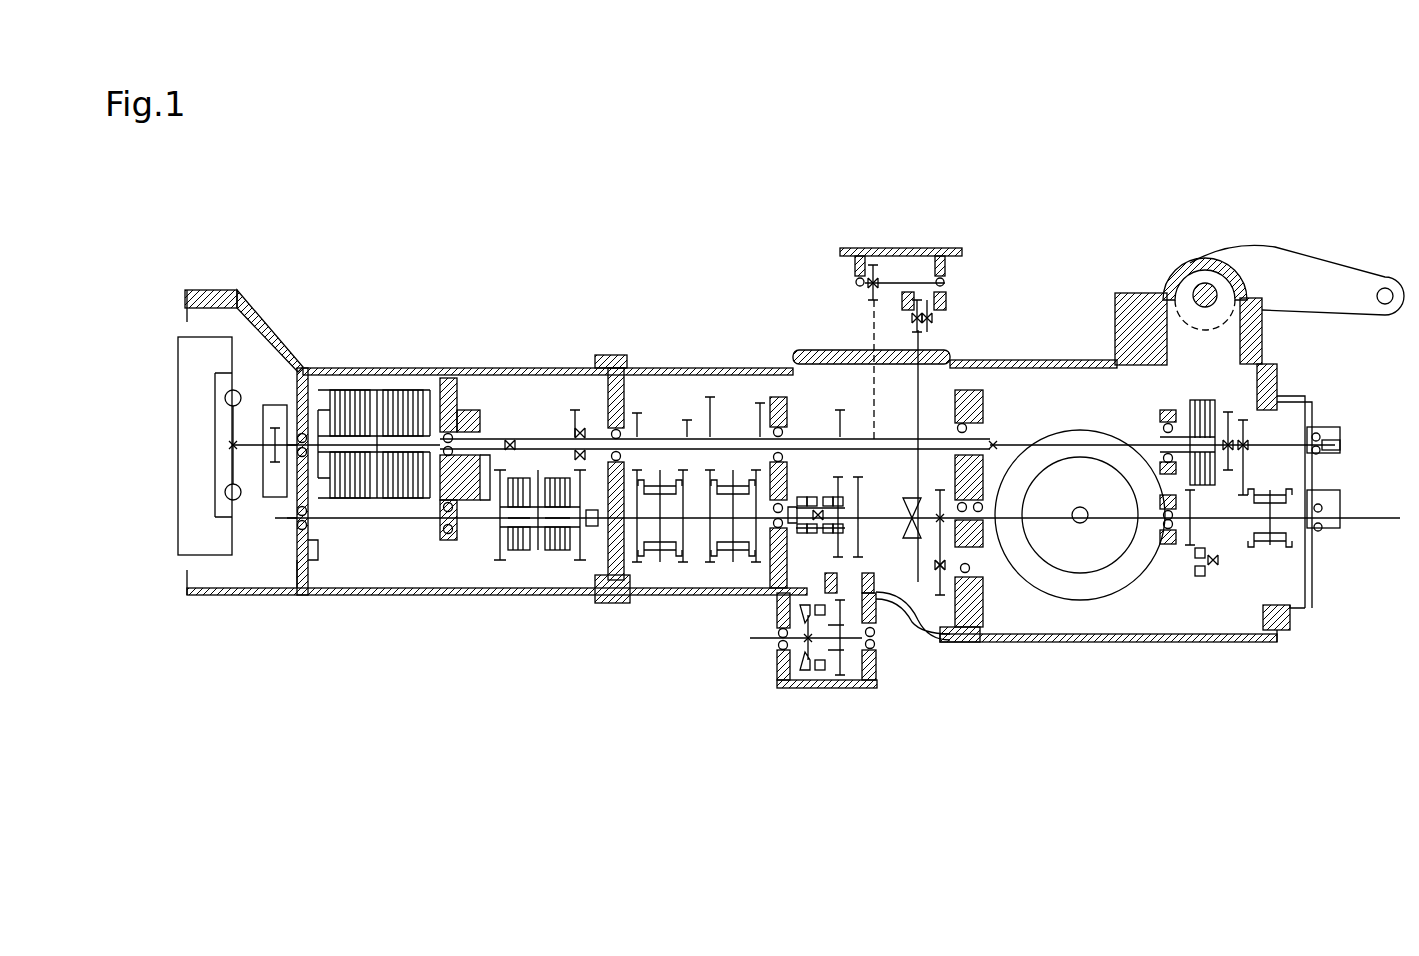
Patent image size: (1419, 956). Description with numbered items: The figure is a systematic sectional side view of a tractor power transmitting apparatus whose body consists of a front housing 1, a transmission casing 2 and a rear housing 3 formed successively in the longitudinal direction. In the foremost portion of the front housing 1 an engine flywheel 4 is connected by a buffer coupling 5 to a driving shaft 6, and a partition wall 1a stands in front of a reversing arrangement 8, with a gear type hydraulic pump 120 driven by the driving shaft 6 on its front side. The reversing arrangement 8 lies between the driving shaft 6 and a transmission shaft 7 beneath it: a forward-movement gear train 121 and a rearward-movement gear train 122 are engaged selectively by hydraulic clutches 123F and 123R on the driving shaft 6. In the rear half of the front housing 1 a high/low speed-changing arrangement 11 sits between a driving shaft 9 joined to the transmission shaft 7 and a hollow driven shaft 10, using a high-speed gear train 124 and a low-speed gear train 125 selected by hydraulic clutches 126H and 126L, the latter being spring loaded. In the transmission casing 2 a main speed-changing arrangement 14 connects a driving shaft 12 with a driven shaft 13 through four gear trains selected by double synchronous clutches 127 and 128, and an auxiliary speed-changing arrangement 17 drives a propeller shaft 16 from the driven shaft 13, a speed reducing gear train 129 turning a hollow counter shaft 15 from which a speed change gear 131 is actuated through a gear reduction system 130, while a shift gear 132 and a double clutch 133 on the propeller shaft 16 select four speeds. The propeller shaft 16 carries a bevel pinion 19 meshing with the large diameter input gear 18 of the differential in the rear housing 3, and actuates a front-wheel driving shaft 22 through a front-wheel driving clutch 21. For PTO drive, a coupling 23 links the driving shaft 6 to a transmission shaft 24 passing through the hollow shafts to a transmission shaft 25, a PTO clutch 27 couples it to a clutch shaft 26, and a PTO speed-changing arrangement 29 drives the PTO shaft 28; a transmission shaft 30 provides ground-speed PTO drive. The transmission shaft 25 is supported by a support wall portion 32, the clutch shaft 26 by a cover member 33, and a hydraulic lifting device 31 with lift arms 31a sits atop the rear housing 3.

The front housing 1 is at (480, 368).
The partition wall 1a is at (300, 557).
The transmission casing 2 is at (745, 455).
The rear housing 3 is at (1158, 642).
The engine flywheel 4 is at (205, 362).
The buffer coupling 5 is at (237, 500).
The driving shaft 6 is at (258, 440).
The transmission shaft 7 is at (380, 520).
The reversing arrangement 8 is at (351, 548).
The driving shaft 9 is at (470, 548).
The hollow driven shaft 10 is at (562, 437).
The high/low speed-changing arrangement 11 is at (540, 428).
The driving shaft 12 is at (663, 433).
The driven shaft 13 is at (700, 565).
The main speed-changing arrangement 14 is at (690, 400).
The hollow counter shaft 15 is at (945, 430).
The propeller shaft 16 is at (887, 505).
The auxiliary speed-changing arrangement 17 is at (830, 398).
The large diameter input gear 18 is at (1100, 590).
The bevel pinion 19 is at (1022, 528).
The front-wheel driving clutch 21 is at (822, 680).
The front-wheel driving shaft 22 is at (765, 643).
The coupling 23 is at (511, 438).
The transmission shaft 24 is at (993, 425).
The transmission shaft 25 is at (1022, 440).
The clutch shaft 26 is at (1275, 442).
The PTO clutch 27 is at (1202, 400).
The PTO shaft 28 is at (1353, 520).
The PTO speed-changing arrangement 29 is at (1313, 490).
The transmission shaft 30 is at (1073, 572).
The hydraulic lifting device 31 is at (1160, 292).
The lift arm 31a is at (1305, 285).
The support wall portion 32 is at (1160, 502).
The cover member 33 is at (1314, 408).
The gear type hydraulic pump 120 is at (285, 412).
The forward-movement gear train 121 is at (452, 560).
The rearward-movement gear train 122 is at (316, 594).
The hydraulic clutch for rearward movement 123R is at (360, 390).
The hydraulic clutch for forward movement 123F is at (415, 390).
The high-speed gear train 124 is at (495, 568).
The low-speed gear train 125 is at (583, 558).
The hydraulic clutch for low speed 126L is at (572, 480).
The hydraulic clutch for high speed 126H is at (517, 550).
The double synchronous clutch 127 is at (653, 562).
The double synchronous clutch 128 is at (758, 373).
The speed reducing gear train 129 is at (800, 548).
The gear reduction system 130 is at (906, 244).
The speed change gear 131 is at (937, 280).
The shift gear 132 is at (920, 604).
The double clutch 133 is at (818, 497).